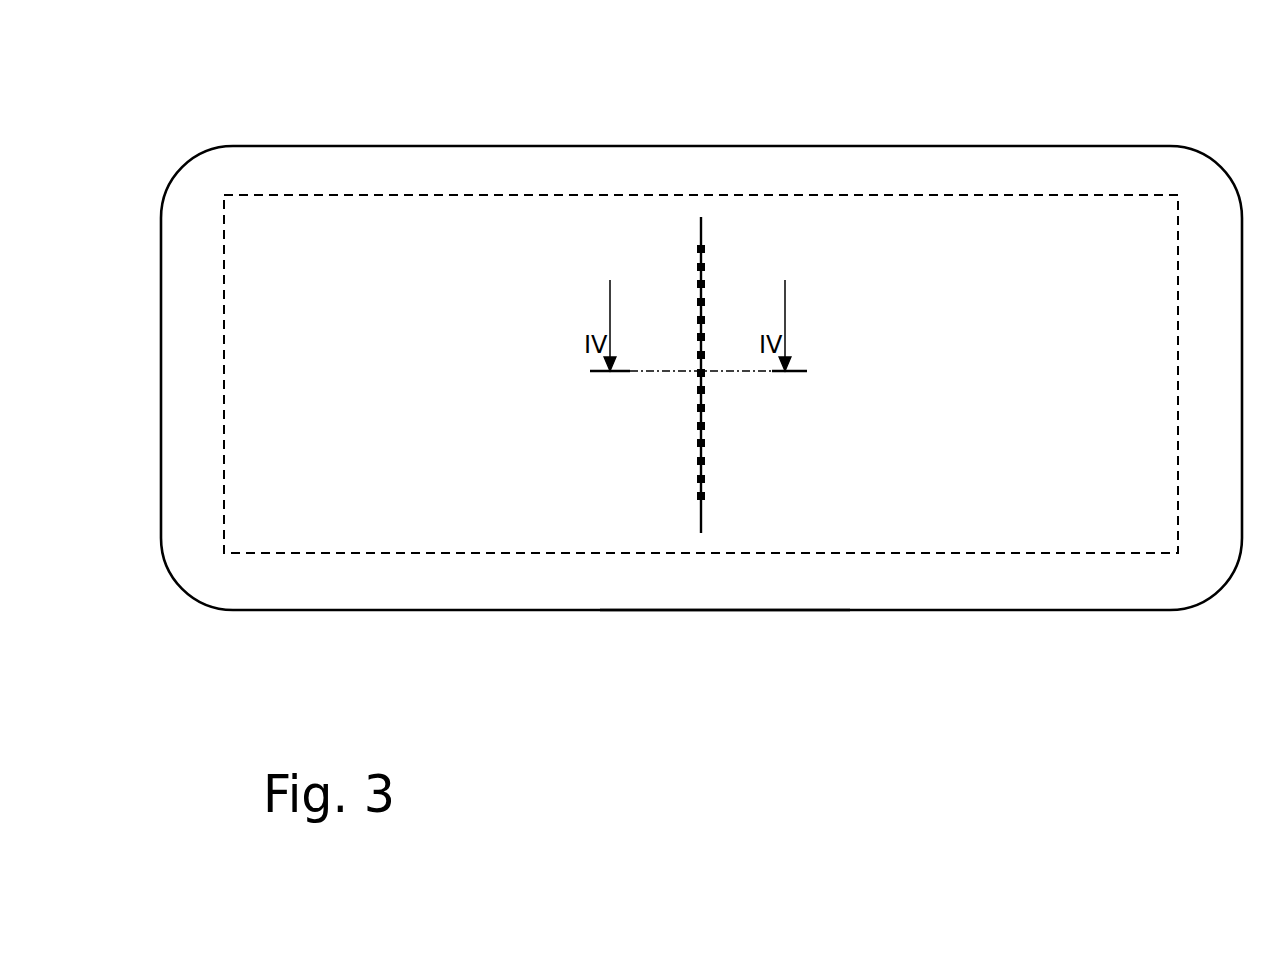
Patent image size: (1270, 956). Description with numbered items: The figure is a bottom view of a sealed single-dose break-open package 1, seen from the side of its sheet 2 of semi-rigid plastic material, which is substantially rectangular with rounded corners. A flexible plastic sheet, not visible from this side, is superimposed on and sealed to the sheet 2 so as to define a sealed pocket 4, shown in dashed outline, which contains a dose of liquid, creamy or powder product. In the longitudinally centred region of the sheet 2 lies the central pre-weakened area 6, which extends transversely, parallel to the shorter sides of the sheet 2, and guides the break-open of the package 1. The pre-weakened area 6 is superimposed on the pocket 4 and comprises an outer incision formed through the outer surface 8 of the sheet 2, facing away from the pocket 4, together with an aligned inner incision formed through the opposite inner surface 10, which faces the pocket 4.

The sealed single-dose break-open package 1 is at (1011, 737).
The sheet of semi-rigid plastic material 2 is at (1030, 168).
The sealed pocket 4 is at (910, 553).
The central pre-weakened area 6 is at (730, 630).
The outer surface 8 is at (700, 445).
The inner surface 10 is at (705, 482).